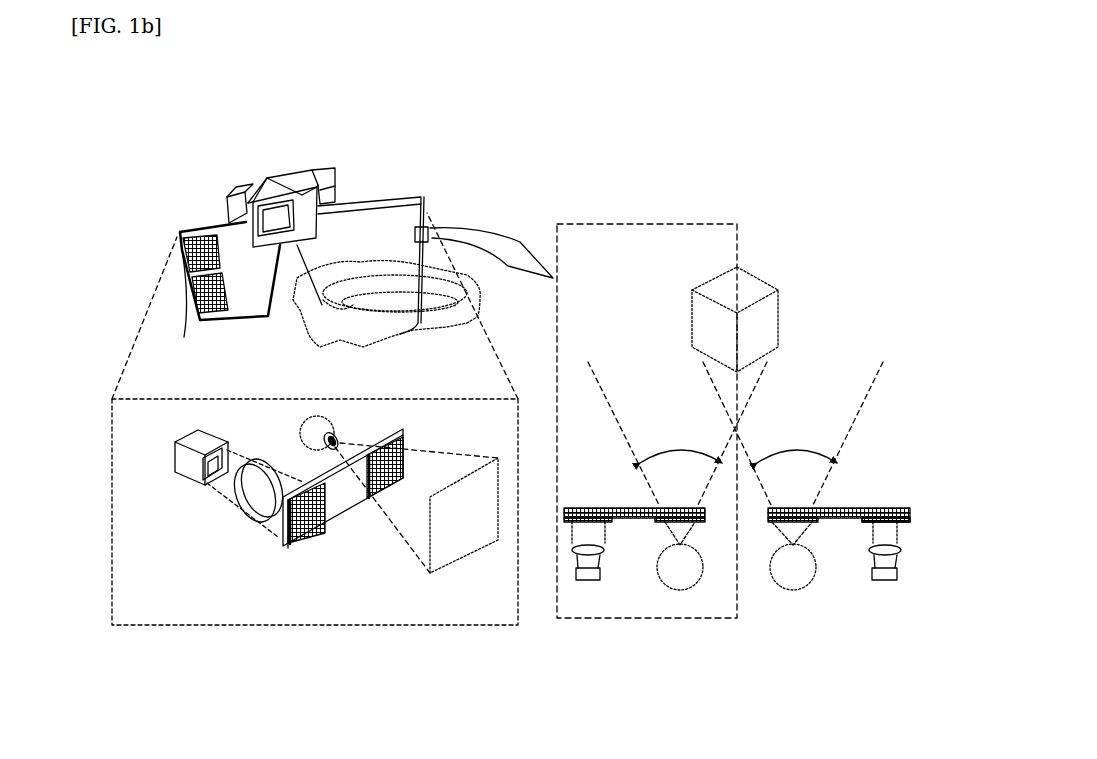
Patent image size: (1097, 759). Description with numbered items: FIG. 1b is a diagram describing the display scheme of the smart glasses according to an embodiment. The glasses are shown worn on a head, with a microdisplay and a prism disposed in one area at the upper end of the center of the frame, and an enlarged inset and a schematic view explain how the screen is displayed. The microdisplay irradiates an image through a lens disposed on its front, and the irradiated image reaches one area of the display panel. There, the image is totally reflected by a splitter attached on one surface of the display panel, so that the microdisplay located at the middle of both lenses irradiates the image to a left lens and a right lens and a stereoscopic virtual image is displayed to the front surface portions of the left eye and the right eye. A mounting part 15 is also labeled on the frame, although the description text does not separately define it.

The mounting bracket 15 is at (240, 205).